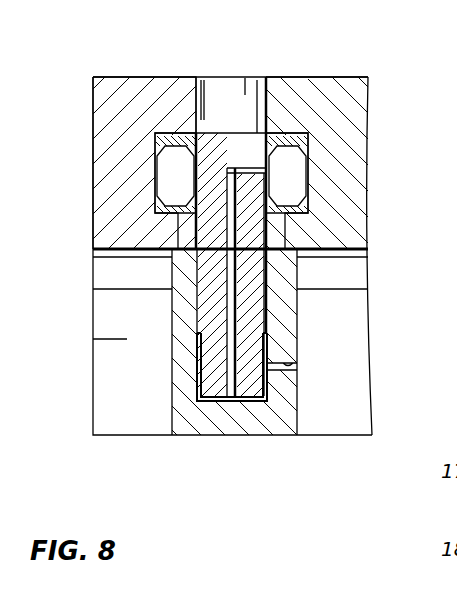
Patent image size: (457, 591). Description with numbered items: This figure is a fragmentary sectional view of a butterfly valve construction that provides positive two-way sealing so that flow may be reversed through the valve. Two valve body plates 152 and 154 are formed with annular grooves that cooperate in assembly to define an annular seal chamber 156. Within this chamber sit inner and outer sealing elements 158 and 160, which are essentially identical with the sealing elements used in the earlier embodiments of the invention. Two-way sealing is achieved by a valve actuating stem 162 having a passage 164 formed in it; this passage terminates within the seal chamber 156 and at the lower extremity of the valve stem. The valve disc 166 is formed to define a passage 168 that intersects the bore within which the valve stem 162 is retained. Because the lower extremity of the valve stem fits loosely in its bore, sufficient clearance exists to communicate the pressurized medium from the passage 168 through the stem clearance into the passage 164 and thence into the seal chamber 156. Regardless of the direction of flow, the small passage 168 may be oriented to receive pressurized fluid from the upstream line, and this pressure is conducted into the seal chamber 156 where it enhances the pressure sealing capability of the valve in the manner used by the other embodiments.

The valve body plate 152 is at (347, 222).
The valve body plate 154 is at (115, 199).
The annular seal chamber 156 is at (287, 160).
The inner sealing element 158 is at (125, 255).
The outer sealing element 160 is at (177, 137).
The valve actuating stem 162 is at (205, 300).
The passage 164 is at (232, 352).
The valve disc 166 is at (290, 403).
The passage 168 is at (300, 366).